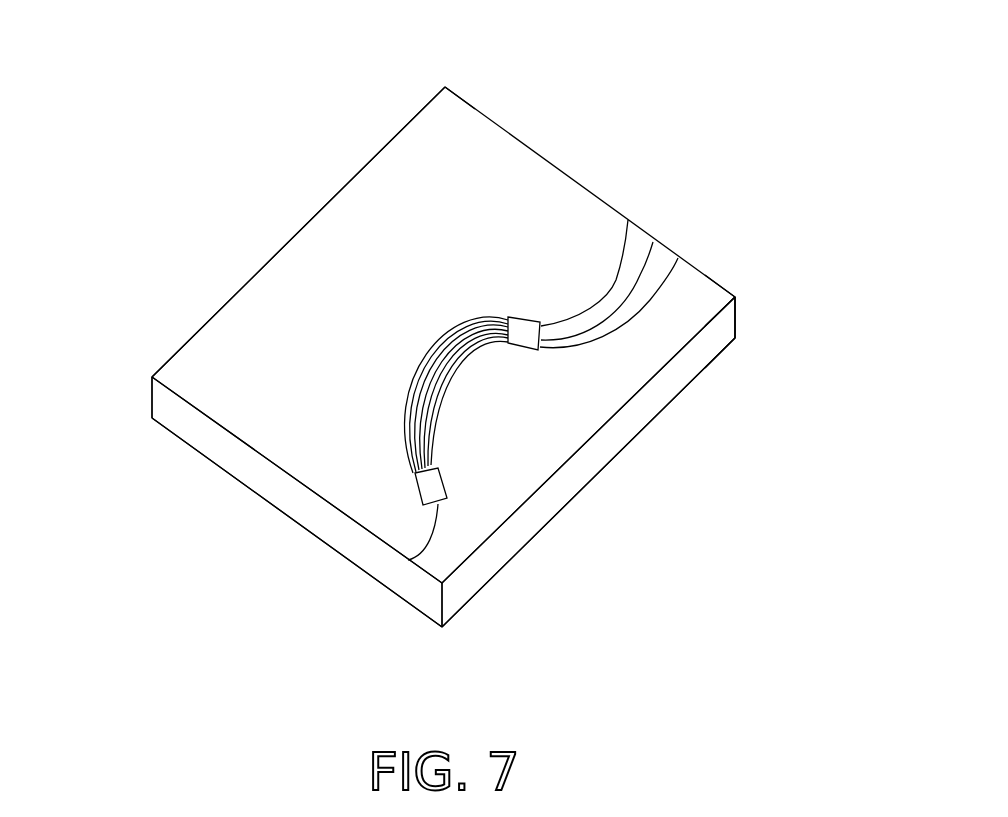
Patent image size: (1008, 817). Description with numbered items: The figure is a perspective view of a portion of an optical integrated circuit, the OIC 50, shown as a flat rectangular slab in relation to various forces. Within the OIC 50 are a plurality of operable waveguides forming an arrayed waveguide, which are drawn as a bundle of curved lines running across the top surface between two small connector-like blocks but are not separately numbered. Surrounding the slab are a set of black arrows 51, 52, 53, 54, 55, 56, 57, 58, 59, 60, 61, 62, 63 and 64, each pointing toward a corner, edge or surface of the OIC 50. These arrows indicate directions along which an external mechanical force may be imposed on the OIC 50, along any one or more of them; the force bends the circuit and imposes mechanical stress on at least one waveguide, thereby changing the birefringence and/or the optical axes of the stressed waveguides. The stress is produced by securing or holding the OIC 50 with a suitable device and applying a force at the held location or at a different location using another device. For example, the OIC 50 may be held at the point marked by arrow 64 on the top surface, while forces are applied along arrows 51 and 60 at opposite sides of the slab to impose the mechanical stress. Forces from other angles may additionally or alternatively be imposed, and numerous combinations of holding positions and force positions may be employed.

The OIC 50 is at (515, 223).
The black arrow 51 is at (250, 444).
The black arrow 52 is at (154, 349).
The black arrow 53 is at (289, 522).
The black arrow 54 is at (441, 646).
The black arrow 55 is at (439, 518).
The black arrow 56 is at (588, 510).
The black arrow 57 is at (588, 440).
The black arrow 58 is at (609, 326).
The black arrow 59 is at (734, 365).
The black arrow 60 is at (776, 345).
The black arrow 61 is at (729, 263).
The black arrow 62 is at (453, 60).
The black arrow 63 is at (298, 194).
The black arrow / holding point 64 is at (472, 367).